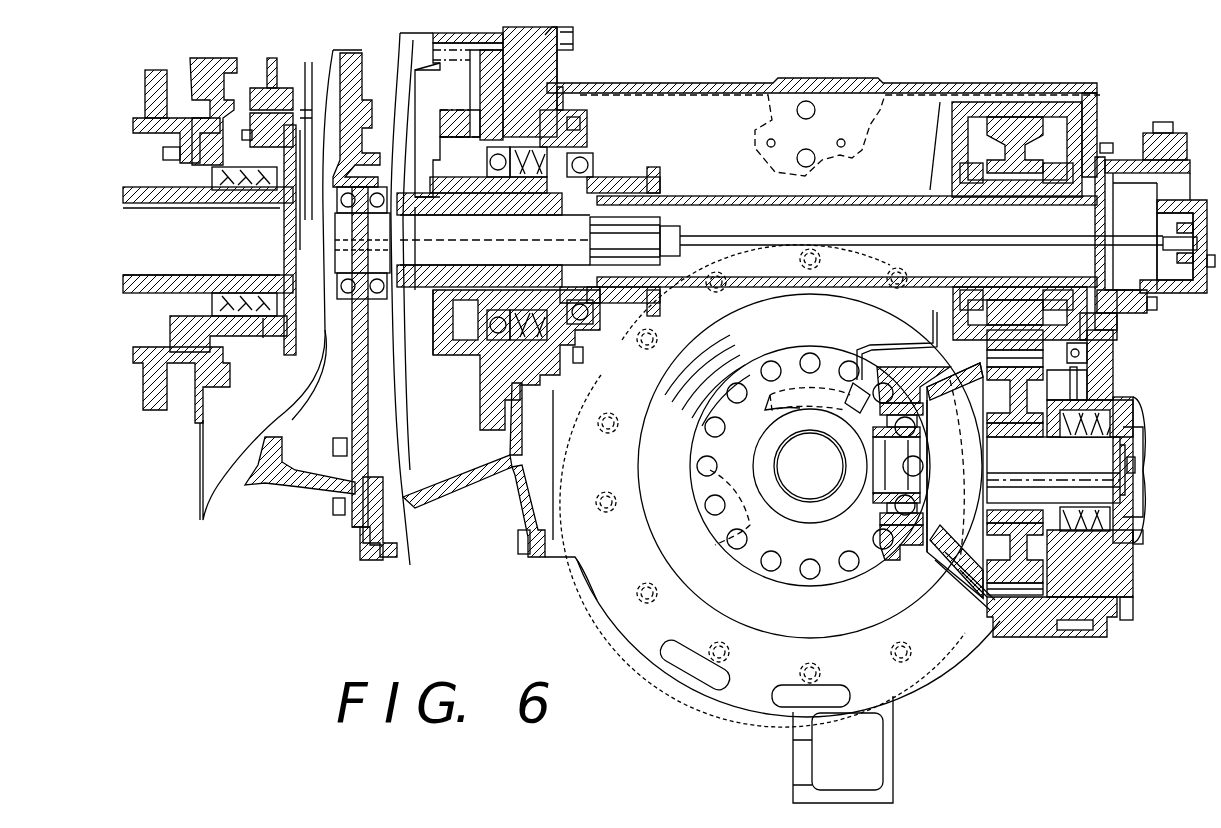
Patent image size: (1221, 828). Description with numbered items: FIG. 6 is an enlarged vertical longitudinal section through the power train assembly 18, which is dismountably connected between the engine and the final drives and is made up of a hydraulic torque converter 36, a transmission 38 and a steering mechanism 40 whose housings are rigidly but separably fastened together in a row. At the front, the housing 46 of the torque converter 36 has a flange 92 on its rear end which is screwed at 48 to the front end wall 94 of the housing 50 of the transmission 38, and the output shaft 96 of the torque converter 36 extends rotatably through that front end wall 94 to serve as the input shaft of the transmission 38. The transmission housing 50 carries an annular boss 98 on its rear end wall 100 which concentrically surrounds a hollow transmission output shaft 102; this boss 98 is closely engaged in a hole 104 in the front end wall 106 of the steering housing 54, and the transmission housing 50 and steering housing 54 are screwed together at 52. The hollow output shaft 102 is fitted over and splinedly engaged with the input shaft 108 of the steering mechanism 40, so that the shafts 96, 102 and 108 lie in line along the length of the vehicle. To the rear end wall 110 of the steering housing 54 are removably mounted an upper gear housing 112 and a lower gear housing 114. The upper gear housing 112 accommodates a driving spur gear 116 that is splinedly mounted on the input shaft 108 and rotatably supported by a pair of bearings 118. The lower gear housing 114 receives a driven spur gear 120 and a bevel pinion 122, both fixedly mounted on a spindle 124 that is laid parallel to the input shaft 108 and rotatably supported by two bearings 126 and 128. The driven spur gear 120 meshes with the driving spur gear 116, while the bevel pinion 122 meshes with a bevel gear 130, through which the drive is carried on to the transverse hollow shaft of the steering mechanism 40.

The power train assembly 18 is at (179, 57).
The hydraulic torque converter 36 is at (240, 498).
The transmission 38 is at (468, 485).
The steering mechanism 40 is at (790, 80).
The housing of the torque converter 46 is at (293, 470).
The fastening of torque converter housing to transmission housing 48 is at (333, 508).
The transmission housing 50 is at (412, 540).
The fastening of transmission housing to steering housing 52 is at (573, 38).
The steering housing 54 is at (672, 98).
The flange 92 is at (362, 520).
The front end wall of the transmission housing 94 is at (372, 528).
The output shaft of the torque converter 96 is at (345, 238).
The annular boss 98 is at (558, 358).
The rear end wall of the transmission housing 100 is at (530, 73).
The hollow transmission output shaft 102 is at (600, 177).
The hole 104 is at (560, 113).
The front end wall of the steering housing 106 is at (555, 60).
The input shaft of the steering mechanism 108 is at (755, 196).
The rear end wall of the steering housing 110 is at (1065, 85).
The upper gear housing 112 is at (1103, 88).
The lower gear housing 114 is at (1010, 625).
The driving spur gear 116 is at (1003, 122).
The bearings 118 is at (1058, 165).
The driven spur gear 120 is at (1035, 583).
The bevel pinion 122 is at (975, 548).
The spindle 124 is at (1043, 478).
The bearing 126 is at (880, 515).
The bearing 128 is at (1112, 425).
The bevel gear 130 is at (712, 343).